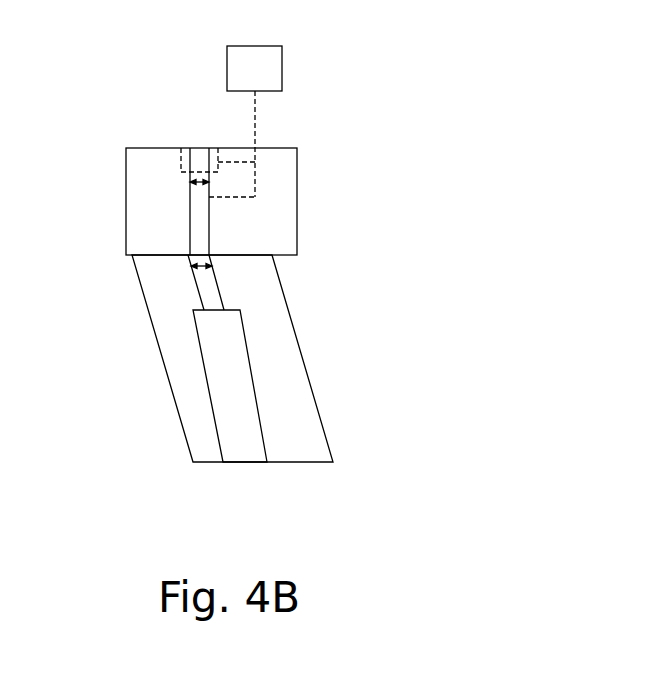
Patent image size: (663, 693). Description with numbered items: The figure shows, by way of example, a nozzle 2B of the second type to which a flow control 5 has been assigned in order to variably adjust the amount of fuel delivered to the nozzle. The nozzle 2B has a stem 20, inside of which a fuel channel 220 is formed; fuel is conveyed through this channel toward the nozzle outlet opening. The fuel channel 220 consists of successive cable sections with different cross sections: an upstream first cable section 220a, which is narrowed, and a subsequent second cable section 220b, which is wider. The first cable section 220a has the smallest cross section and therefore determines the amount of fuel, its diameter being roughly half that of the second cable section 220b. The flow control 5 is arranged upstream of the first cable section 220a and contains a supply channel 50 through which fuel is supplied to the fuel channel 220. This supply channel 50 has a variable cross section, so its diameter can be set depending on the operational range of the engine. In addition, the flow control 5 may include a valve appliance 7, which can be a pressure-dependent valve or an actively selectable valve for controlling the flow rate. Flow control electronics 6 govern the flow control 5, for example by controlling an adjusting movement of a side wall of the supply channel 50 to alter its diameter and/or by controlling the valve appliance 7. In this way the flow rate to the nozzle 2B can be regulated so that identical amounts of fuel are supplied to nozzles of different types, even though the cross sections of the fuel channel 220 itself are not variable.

The flow control 5 is at (297, 158).
The flow control electronics 6 is at (254, 121).
The valve appliance 7 is at (188, 148).
The supply channel 50 is at (189, 197).
The stem 20 is at (313, 392).
The fuel channel 220 is at (253, 385).
The first cable section 220a is at (223, 300).
The second cable section 220b is at (246, 452).
The nozzle of the second type 2B is at (433, 141).